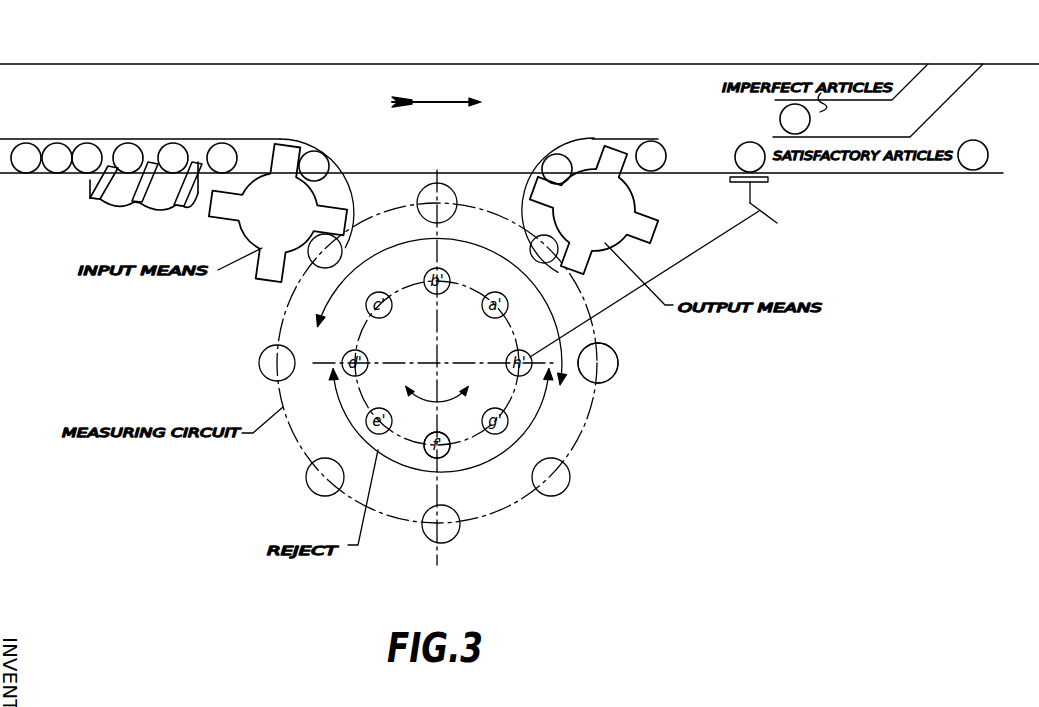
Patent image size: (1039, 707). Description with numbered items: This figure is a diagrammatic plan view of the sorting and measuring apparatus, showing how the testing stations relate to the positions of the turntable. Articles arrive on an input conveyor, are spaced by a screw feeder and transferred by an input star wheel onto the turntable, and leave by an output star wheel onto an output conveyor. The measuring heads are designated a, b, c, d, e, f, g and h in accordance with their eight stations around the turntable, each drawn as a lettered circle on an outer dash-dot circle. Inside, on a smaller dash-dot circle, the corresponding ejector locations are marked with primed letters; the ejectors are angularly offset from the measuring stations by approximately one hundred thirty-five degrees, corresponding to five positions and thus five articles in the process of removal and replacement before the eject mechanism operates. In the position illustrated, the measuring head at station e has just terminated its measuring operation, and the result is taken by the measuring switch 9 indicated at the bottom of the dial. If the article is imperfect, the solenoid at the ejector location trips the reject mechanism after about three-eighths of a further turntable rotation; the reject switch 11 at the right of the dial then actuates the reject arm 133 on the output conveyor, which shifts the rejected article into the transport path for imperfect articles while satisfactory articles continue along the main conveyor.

The reject arm 133 is at (732, 267).
The reject switch 11 is at (706, 387).
The measuring switch 9 is at (579, 488).
The measuring head station a is at (277, 363).
The measuring head station b is at (325, 477).
The measuring head station c is at (441, 524).
The measuring head station d is at (551, 477).
The measuring head station e is at (598, 363).
The measuring head station f is at (544, 249).
The measuring head station g is at (437, 203).
The measuring head station h is at (325, 251).